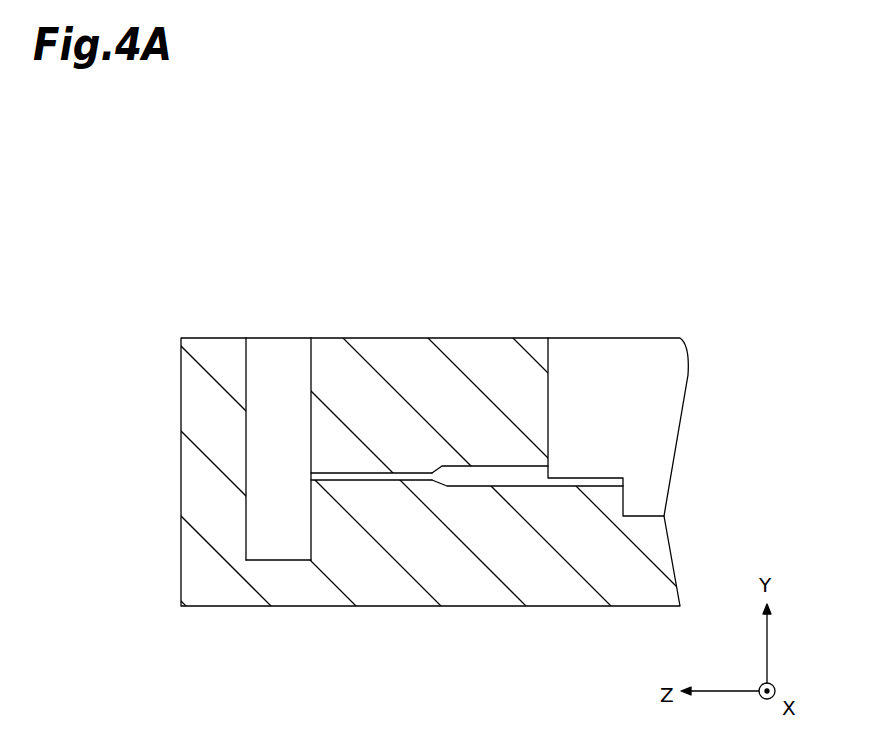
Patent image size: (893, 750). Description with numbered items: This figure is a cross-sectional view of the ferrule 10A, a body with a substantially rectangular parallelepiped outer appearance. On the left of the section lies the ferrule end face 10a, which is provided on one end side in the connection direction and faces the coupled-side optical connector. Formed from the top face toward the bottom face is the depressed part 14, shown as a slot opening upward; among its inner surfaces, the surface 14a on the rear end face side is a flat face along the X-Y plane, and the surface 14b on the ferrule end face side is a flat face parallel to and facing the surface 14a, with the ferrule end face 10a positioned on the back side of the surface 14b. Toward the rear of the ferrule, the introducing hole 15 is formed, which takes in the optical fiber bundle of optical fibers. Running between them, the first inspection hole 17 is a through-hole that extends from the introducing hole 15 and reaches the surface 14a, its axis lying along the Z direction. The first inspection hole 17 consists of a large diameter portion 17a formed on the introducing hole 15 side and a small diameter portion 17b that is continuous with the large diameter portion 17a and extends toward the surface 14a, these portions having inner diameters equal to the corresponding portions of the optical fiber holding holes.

The ferrule 10A is at (515, 329).
The ferrule end face 10a is at (181, 497).
The depressed part 14 is at (298, 393).
The surface 14a is at (278, 353).
The surface 14b is at (247, 390).
The introducing hole 15 is at (652, 462).
The first inspection hole 17 is at (467, 596).
The large diameter portion 17a is at (463, 485).
The small diameter portion 17b is at (367, 473).